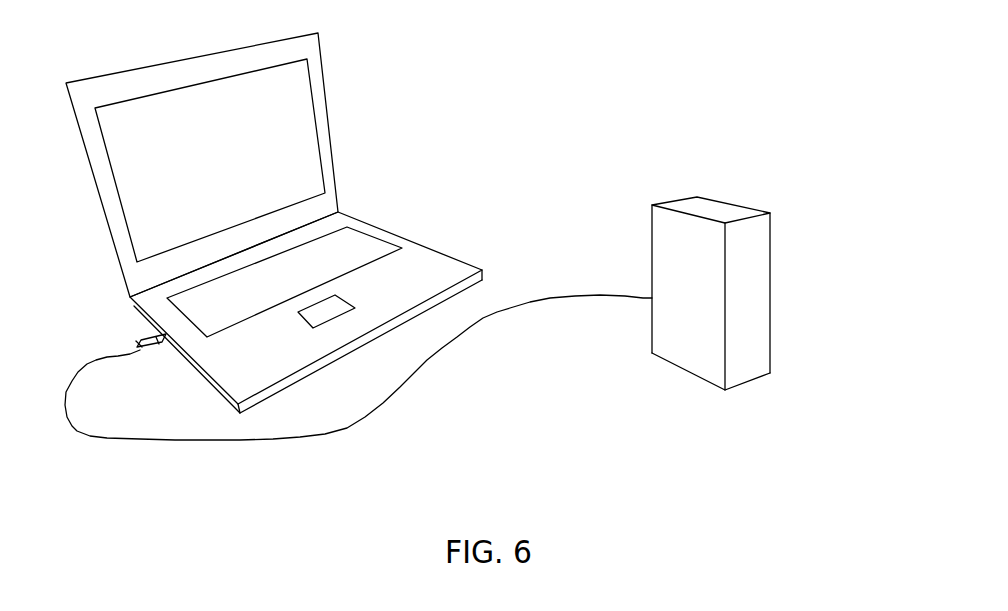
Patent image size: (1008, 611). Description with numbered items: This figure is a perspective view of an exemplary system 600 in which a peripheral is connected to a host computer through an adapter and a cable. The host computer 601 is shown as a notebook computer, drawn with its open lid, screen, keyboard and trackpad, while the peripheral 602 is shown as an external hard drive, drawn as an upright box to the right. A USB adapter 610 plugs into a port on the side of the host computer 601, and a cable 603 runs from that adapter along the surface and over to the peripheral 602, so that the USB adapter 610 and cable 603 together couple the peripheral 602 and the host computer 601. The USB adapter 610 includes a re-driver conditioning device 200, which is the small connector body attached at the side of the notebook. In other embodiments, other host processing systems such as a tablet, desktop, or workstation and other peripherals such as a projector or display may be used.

The system 600 is at (467, 259).
The host computer 601 is at (328, 118).
The peripheral 602 is at (770, 309).
The cable 603 is at (133, 438).
The USB adapter 610 is at (139, 344).
The re-driver conditioning device 200 is at (150, 357).